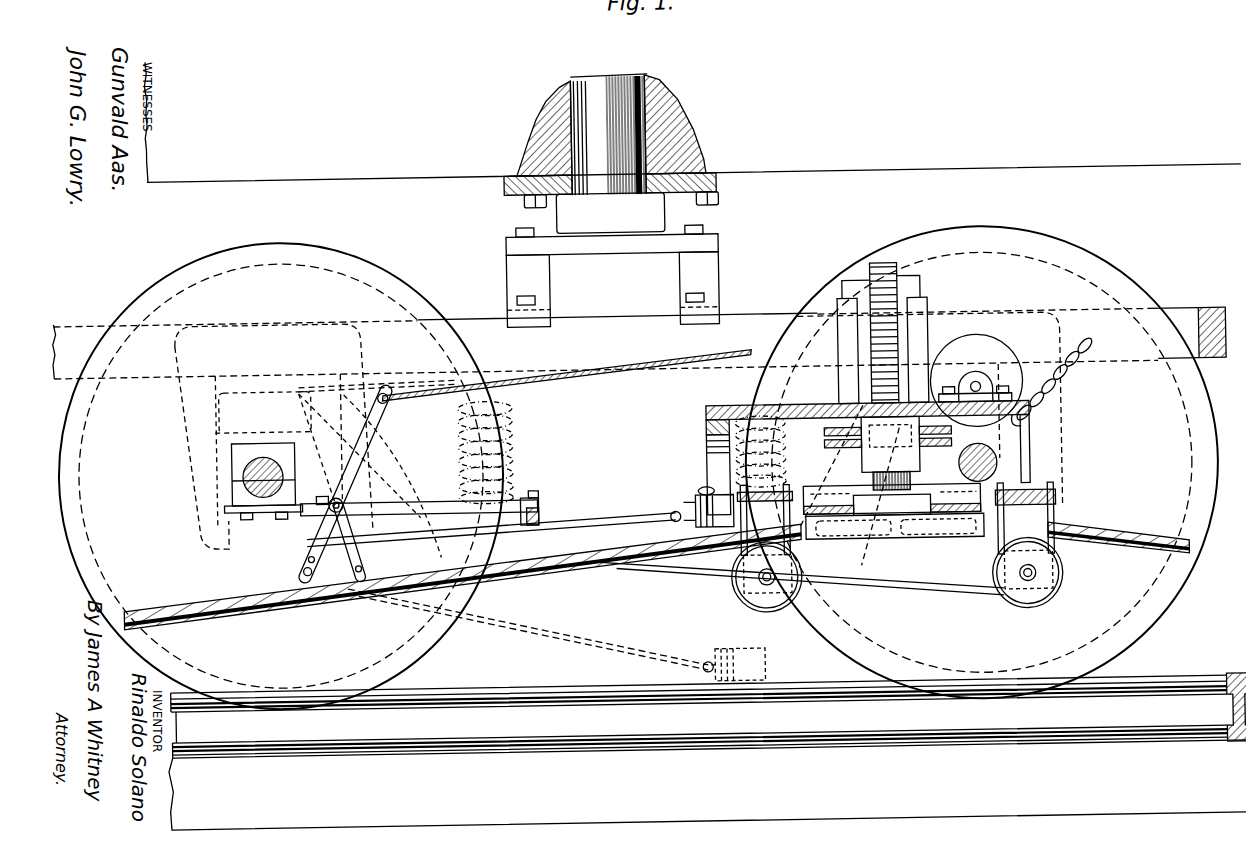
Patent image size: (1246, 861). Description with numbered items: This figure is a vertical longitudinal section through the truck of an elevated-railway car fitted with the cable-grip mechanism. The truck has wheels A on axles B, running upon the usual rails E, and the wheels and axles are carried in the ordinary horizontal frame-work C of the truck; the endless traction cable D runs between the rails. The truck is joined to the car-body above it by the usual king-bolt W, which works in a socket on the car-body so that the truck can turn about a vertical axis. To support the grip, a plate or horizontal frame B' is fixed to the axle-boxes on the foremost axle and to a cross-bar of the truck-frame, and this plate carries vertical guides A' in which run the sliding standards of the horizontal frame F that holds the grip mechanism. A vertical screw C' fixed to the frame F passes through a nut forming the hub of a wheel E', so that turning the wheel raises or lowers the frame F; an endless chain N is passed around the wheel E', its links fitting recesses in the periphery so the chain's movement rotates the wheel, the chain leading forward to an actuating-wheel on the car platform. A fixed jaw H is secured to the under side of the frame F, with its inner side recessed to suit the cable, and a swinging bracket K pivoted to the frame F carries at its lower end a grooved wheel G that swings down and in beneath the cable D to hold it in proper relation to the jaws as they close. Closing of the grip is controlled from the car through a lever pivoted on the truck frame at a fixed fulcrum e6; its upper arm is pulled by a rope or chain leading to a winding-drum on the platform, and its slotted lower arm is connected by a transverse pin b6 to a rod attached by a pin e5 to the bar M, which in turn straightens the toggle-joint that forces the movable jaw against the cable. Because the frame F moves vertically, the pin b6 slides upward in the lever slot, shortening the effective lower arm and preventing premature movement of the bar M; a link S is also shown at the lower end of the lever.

The king-bolt W is at (609, 134).
The wheels A is at (640, 410).
The vertical guides A' is at (894, 350).
The axles B is at (619, 475).
The vertical screw C' is at (858, 318).
The sliding standards B'' is at (900, 283).
The horizontal frame-work C is at (782, 461).
The eye e5 is at (704, 495).
The wheel E' is at (818, 486).
The pivot or fulcrum e6 is at (360, 496).
The transverse pin or bolt b6 is at (305, 545).
The hanger link S is at (344, 542).
The bar M is at (731, 588).
The swinging bracket K is at (810, 548).
The cable or wire rope D is at (656, 574).
The horizontal frame F is at (866, 548).
The jaw H is at (914, 548).
The plate or horizontal frame B' is at (871, 434).
The wheel / drum R is at (977, 381).
The endless chain N is at (1053, 381).
The wheel G is at (897, 575).
The rails E is at (707, 751).